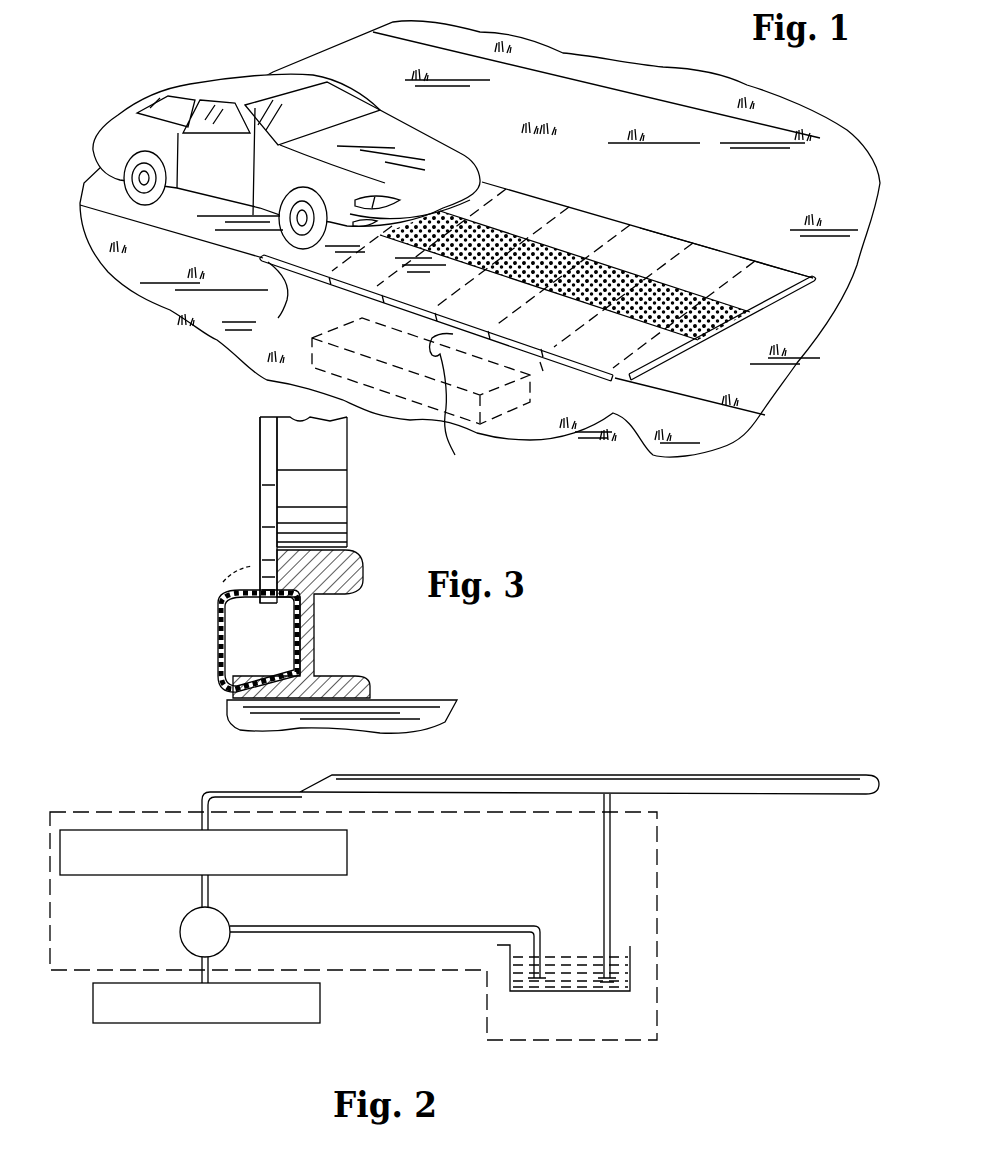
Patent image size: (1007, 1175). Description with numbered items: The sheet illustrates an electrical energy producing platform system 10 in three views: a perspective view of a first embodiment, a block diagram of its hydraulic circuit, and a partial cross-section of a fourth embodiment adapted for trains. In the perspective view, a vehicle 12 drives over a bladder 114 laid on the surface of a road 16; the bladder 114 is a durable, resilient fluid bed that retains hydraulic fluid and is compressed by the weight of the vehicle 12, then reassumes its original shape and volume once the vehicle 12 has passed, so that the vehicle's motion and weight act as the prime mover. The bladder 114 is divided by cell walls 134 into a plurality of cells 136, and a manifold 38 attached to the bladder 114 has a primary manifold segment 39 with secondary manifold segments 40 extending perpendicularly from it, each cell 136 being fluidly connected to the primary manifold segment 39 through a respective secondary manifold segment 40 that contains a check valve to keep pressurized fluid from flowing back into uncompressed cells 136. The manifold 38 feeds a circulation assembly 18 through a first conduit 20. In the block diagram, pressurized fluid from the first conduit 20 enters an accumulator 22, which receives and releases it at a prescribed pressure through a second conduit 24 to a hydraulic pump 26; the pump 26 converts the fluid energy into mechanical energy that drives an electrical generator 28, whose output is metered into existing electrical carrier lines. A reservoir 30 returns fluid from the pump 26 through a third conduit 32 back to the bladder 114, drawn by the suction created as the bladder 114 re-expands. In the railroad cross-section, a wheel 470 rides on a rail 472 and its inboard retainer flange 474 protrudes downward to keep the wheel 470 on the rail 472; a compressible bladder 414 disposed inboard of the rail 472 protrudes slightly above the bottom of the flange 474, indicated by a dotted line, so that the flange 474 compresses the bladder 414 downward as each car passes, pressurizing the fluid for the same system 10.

In FIG. 1, the electrical energy producing platform system 10 is at (732, 188).
In FIG. 3, the electrical energy producing platform system 10 is at (158, 591).
In FIG. 2, the electrical energy producing platform system 10 is at (706, 735).
In FIG. 1, the vehicle 12 is at (430, 137).
In FIG. 1, the road 16 is at (773, 384).
In FIG. 1, the circulation assembly 18 is at (497, 462).
In FIG. 2, the circulation assembly 18 is at (87, 812).
In FIG. 1, the first conduit 20 is at (457, 409).
In FIG. 2, the first conduit 20 is at (223, 793).
In FIG. 2, the accumulator 22 is at (347, 843).
In FIG. 2, the second conduit 24 is at (210, 888).
In FIG. 2, the hydraulic pump 26 is at (178, 935).
In FIG. 2, the electrical generator 28 is at (320, 988).
In FIG. 2, the reservoir 30 is at (630, 945).
In FIG. 2, the third conduit 32 is at (610, 850).
In FIG. 1, the manifold 38 is at (615, 388).
In FIG. 1, the primary manifold segment 39 is at (545, 372).
In FIG. 1, the secondary manifold segment 40 is at (283, 312).
In FIG. 1, the bladder 114 is at (577, 195).
In FIG. 1, the cell walls 134 is at (610, 222).
In FIG. 1, the cells 136 is at (733, 275).
In FIG. 3, the compressible bladder 414 is at (217, 657).
In FIG. 3, the wheel 470 is at (300, 510).
In FIG. 3, the rail 472 is at (347, 683).
In FIG. 3, the inboard retainer flange 474 is at (262, 504).